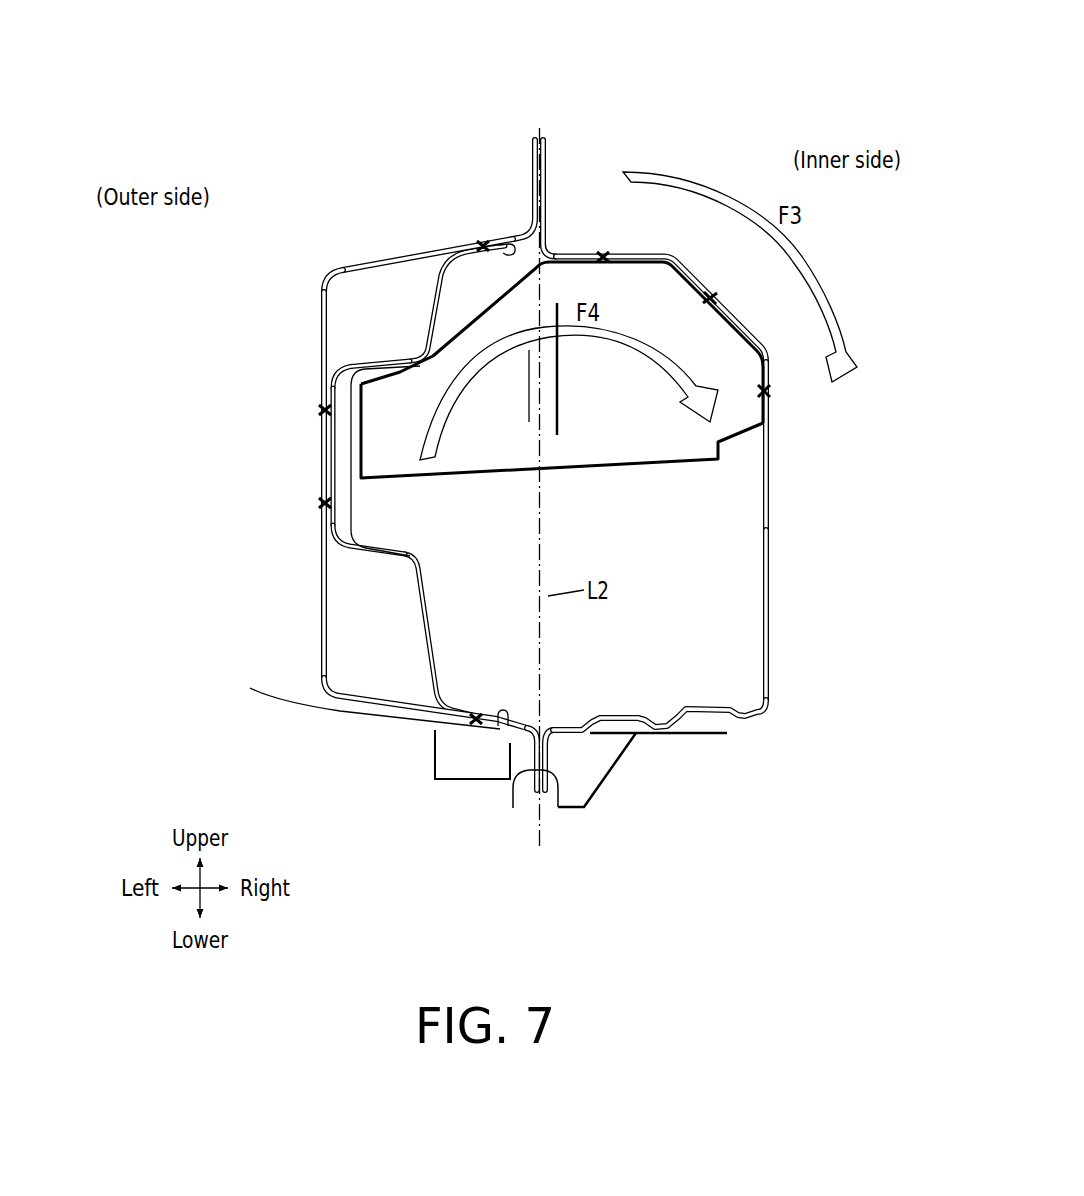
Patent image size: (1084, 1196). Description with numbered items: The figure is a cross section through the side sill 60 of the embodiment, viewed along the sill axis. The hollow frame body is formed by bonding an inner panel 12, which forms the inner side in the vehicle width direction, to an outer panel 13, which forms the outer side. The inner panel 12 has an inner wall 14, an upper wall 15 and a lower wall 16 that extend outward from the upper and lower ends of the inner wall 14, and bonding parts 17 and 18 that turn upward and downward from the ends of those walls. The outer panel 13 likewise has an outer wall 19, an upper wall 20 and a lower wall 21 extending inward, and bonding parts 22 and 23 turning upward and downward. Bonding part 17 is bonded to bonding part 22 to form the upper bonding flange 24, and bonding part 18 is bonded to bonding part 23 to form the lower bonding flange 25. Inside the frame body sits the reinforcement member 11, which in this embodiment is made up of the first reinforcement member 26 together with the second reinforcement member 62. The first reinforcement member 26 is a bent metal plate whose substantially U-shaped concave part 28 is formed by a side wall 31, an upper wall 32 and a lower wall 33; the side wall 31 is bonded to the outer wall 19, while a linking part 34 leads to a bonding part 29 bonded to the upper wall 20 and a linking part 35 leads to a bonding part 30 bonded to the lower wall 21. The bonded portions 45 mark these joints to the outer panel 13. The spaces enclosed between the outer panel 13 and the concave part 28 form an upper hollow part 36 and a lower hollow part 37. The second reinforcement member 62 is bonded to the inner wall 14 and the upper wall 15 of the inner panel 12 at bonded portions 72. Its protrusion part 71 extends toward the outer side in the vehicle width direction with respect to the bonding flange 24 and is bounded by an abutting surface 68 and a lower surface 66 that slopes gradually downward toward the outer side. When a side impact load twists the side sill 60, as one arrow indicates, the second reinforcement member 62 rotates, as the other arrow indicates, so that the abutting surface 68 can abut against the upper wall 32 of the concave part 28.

The reinforcement member 11 is at (581, 658).
The inner panel 12 is at (779, 510).
The outer panel 13 is at (318, 273).
The inner wall 14 is at (771, 556).
The upper wall 15 is at (655, 254).
The lower wall 16 is at (727, 715).
The bonding part 17 is at (546, 178).
The bonding part 18 is at (558, 808).
The outer wall 19 is at (322, 310).
The upper wall 20 is at (373, 262).
The lower wall 21 is at (364, 706).
The bonding part 22 is at (532, 178).
The bonding part 23 is at (514, 808).
The bonding flange 24 is at (535, 144).
The bonding flange 25 is at (537, 818).
The first reinforcement member 26 is at (444, 657).
The concave part 28 is at (264, 449).
The bonding part 29 is at (513, 240).
The bonding part 30 is at (492, 732).
The side wall 31 is at (330, 440).
The upper wall 32 is at (376, 364).
The lower wall 33 is at (372, 548).
The linking part 34 is at (433, 318).
The linking part 35 is at (423, 640).
The hollow part 36 is at (410, 234).
The hollow part 37 is at (374, 543).
The bonded portions 45 is at (483, 246).
The side sill 60 is at (562, 273).
The second reinforcement member 62 is at (663, 447).
The lower surface 66 is at (472, 478).
The abutting surface 68 is at (393, 369).
The protrusion part 71 is at (380, 460).
The bonded portion 72 is at (603, 254).